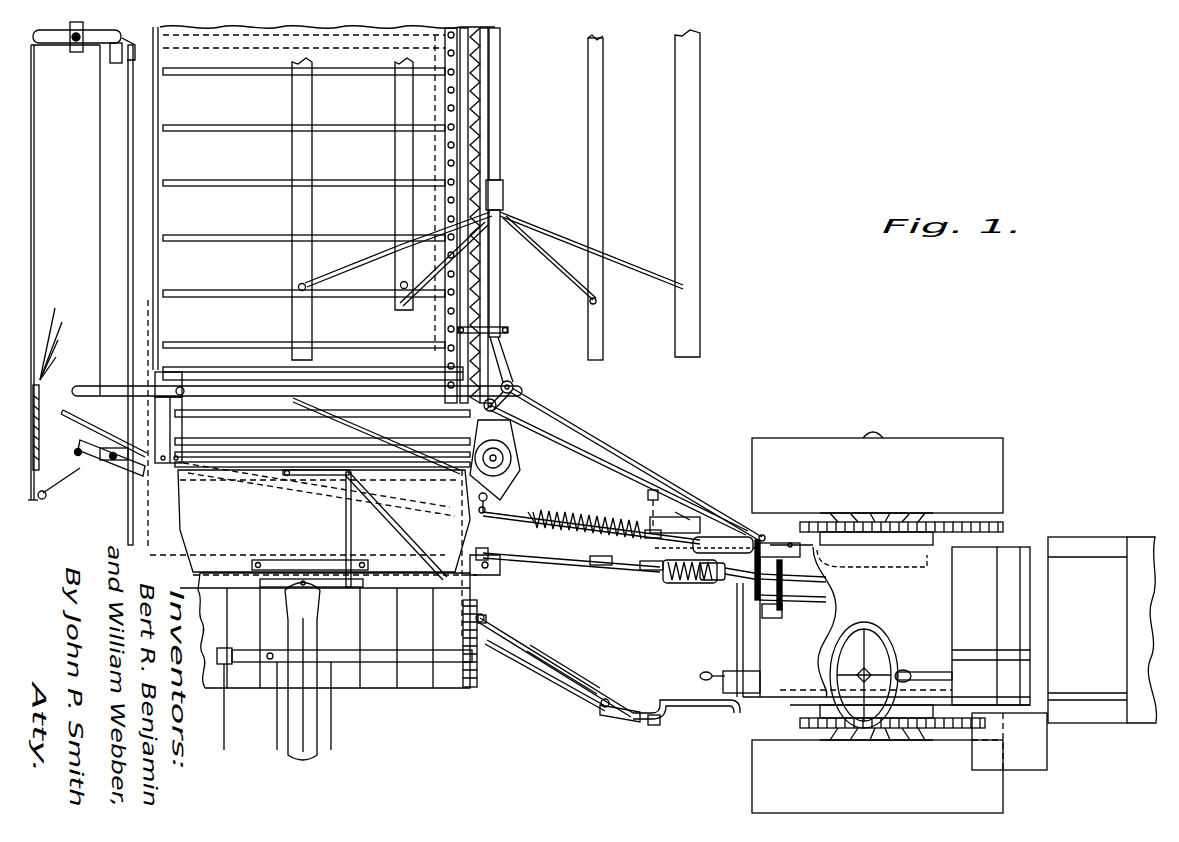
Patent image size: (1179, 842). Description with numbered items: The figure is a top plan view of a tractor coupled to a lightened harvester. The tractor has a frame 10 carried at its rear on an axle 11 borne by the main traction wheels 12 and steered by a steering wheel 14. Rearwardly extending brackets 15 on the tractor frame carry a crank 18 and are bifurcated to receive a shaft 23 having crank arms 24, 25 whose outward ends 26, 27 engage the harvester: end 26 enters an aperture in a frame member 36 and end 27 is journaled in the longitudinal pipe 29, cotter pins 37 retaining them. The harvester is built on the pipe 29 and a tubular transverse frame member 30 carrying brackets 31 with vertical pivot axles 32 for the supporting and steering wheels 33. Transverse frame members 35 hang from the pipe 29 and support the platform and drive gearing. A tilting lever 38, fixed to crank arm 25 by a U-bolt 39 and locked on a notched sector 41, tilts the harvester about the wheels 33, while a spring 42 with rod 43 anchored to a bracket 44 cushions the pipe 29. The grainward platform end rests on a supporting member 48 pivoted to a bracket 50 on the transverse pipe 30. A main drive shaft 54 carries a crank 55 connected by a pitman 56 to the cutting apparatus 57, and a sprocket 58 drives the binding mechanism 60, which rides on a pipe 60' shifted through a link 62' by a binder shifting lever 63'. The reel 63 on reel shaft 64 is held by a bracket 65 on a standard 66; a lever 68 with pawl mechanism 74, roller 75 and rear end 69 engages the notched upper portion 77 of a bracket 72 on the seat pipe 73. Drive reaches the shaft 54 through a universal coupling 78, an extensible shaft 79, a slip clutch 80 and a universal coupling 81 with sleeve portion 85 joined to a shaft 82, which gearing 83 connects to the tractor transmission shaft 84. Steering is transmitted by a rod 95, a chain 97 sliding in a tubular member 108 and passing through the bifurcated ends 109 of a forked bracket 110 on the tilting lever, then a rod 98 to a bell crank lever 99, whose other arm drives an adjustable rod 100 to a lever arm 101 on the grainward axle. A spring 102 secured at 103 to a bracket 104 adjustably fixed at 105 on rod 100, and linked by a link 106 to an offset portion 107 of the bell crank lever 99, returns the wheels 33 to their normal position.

The frame 10 is at (1066, 600).
The axle 11 is at (878, 433).
The main traction wheels 12 is at (952, 443).
The steering wheel 14 is at (888, 642).
The brackets 15 is at (718, 722).
The crank 18 is at (703, 673).
The shaft 23 is at (738, 630).
The crank arm 24 is at (680, 712).
The crank arm 25 is at (700, 537).
The outwardly extending end portion 26 is at (653, 725).
The outwardly extending end portion 27 is at (655, 490).
The longitudinal frame member 29 is at (566, 506).
The transverse frame member 30 is at (104, 178).
The brackets 31 is at (118, 63).
The vertical pivot axles 32 is at (157, 270).
The supporting and steering wheels 33 is at (112, 52).
The transverse frame members 35 is at (455, 500).
The frame member 36 is at (500, 650).
The cotter pins 37 is at (650, 715).
The tilting lever 38 is at (653, 530).
The U-bolt 39 is at (680, 515).
The notched sector 41 is at (607, 520).
The spring 42 is at (600, 565).
The rod 43 is at (532, 518).
The bracket 44 is at (487, 493).
The supporting member 48 is at (310, 215).
The bracket 50 is at (166, 47).
The main drive shaft 54 is at (232, 560).
The crank 55 is at (480, 570).
The pitman 56 is at (470, 582).
The reciprocating cutting apparatus 57 is at (488, 163).
The sprocket 58 is at (183, 530).
The binding mechanism 60 is at (344, 672).
The pipe 60' is at (546, 675).
The link 62' is at (563, 682).
The reel 63 is at (713, 193).
The binder shifting lever 63' is at (586, 716).
The reel shaft 64 is at (495, 117).
The bracket 65 is at (507, 363).
The standard 66 is at (513, 385).
The lever 68 is at (577, 447).
The rear end 69 is at (180, 388).
The bracket 72 is at (153, 392).
The seat pipe 73 is at (103, 386).
The pawl locking mechanism 74 is at (490, 378).
The roller 75 is at (233, 397).
The upper horizontal portion 77 is at (330, 393).
The universal coupling 78 is at (482, 552).
The longitudinally extensible shaft 79 is at (553, 566).
The slip clutch 80 is at (673, 583).
The universal coupling 81 is at (712, 583).
The shaft 82 is at (827, 578).
The gearing 83 is at (825, 598).
The main transmission shaft 84 is at (803, 604).
The sleeve portion 85 is at (740, 578).
The rod 95 is at (902, 567).
The chain 97 is at (717, 540).
The rod 98 is at (182, 430).
The bell crank lever 99 is at (97, 432).
The longitudinally adjustable rod 100 is at (33, 218).
The lever arm 101 is at (55, 42).
The spring 102 is at (61, 411).
The securing point 103 is at (65, 355).
The bracket 104 is at (60, 328).
The adjustable securing point 105 is at (52, 312).
The link 106 is at (123, 459).
The offset portion 107 is at (50, 497).
The tubular member 108 is at (793, 545).
The bifurcated outer ends 109 is at (645, 570).
The forked bracket 110 is at (645, 515).